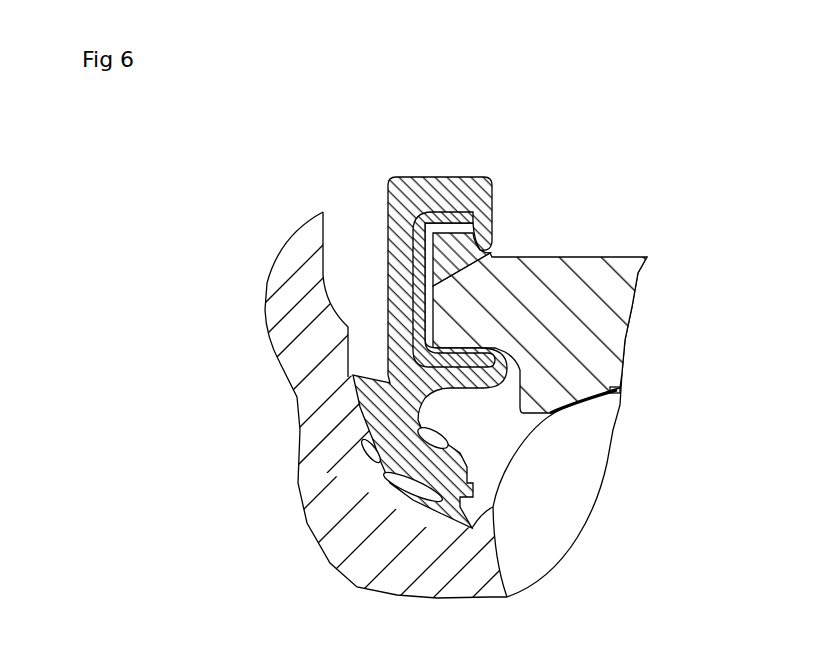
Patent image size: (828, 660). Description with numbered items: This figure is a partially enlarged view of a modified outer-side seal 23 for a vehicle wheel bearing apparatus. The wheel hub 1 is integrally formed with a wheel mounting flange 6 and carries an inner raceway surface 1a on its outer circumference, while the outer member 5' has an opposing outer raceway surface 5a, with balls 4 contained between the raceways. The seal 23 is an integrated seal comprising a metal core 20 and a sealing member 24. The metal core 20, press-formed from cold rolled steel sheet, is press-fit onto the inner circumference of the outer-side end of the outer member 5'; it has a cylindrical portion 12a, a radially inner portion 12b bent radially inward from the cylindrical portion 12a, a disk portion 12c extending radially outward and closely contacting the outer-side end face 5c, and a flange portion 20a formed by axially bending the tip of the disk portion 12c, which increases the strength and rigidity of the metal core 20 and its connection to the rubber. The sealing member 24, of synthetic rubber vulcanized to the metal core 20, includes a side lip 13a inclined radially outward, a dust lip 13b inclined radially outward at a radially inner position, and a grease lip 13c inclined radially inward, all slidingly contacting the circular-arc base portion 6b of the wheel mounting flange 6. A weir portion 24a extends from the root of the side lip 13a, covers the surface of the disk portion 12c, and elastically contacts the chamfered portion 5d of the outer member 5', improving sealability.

The wheel hub 1 is at (314, 548).
The inner raceway surface 1a is at (510, 560).
The rolling elements (balls) 4 is at (597, 446).
The outer member 5' is at (572, 309).
The outer raceway surface 5a is at (612, 393).
The outer-side end face 5c is at (433, 306).
The chamfered portion 5d is at (460, 242).
The wheel mounting flange 6 is at (414, 393).
The base portion 6b is at (483, 507).
The cylindrical portion 12a is at (413, 318).
The radially inner portion 12b is at (388, 343).
The disk portion 12c is at (388, 257).
The side lip 13a is at (350, 374).
The dust lip 13b is at (365, 432).
The grease lip 13c is at (425, 527).
The metal core 20 is at (306, 292).
The flange portion 20a is at (388, 220).
The seal 23 is at (306, 327).
The sealing member 24 is at (336, 327).
The weir portion 24a is at (443, 195).